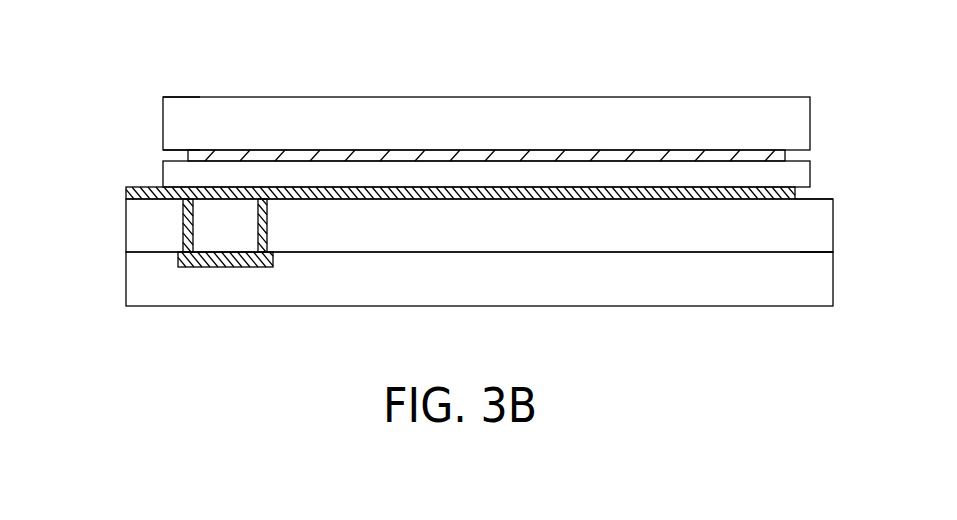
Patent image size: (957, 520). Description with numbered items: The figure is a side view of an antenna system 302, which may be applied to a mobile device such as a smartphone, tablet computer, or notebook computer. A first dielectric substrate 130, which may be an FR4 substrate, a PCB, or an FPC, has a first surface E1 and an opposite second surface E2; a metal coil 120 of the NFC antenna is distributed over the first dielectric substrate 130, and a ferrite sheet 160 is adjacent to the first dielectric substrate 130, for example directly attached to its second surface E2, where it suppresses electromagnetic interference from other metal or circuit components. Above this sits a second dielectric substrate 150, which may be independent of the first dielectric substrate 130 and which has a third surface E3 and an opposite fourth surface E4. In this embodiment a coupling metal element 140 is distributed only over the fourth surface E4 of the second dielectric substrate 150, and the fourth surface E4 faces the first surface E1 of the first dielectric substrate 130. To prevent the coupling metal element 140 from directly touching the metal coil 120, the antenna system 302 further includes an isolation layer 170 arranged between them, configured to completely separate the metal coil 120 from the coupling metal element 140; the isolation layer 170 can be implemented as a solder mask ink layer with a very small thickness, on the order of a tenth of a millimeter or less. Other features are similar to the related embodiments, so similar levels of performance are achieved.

The antenna system 302 is at (92, 37).
The second dielectric substrate 150 is at (173, 125).
The coupling metal element 140 is at (572, 157).
The isolation layer 170 is at (173, 174).
The metal coil 120 is at (126, 195).
The first dielectric substrate 130 is at (136, 228).
The ferrite sheet 160 is at (136, 282).
The first surface E1 is at (818, 199).
The second surface E2 is at (812, 253).
The third surface E3 is at (172, 97).
The fourth surface E4 is at (172, 152).